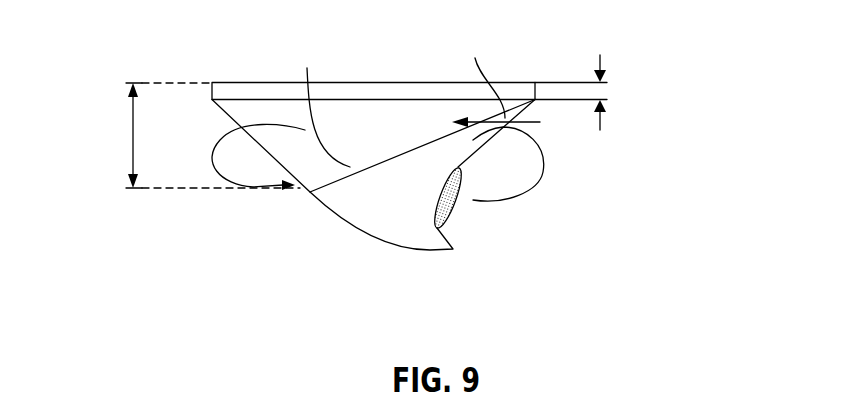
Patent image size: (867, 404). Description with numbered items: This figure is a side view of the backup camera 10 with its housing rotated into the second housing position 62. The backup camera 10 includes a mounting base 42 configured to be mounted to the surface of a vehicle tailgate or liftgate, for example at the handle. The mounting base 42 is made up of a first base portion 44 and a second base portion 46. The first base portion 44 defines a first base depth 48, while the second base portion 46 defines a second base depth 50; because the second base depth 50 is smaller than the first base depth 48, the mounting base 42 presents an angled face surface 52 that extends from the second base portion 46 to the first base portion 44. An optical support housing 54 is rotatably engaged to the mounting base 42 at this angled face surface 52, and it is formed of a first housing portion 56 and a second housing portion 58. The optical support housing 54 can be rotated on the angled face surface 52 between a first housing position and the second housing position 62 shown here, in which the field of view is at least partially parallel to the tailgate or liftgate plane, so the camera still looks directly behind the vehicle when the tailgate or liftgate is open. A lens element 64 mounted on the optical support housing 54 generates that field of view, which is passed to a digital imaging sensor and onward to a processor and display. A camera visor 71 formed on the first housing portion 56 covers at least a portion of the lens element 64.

The backup camera 10 is at (645, 153).
The mounting base 42 is at (337, 118).
The first base portion 44 is at (295, 159).
The second base portion 46 is at (483, 74).
The first base depth 48 is at (132, 137).
The second base depth 50 is at (601, 62).
The angled face surface 52 is at (321, 103).
The optical support housing 54 is at (378, 256).
The first housing portion 56 is at (347, 213).
The second housing portion 58 is at (512, 154).
The second housing position 62 is at (439, 266).
The lens element 64 is at (455, 210).
The camera visor 71 is at (457, 247).